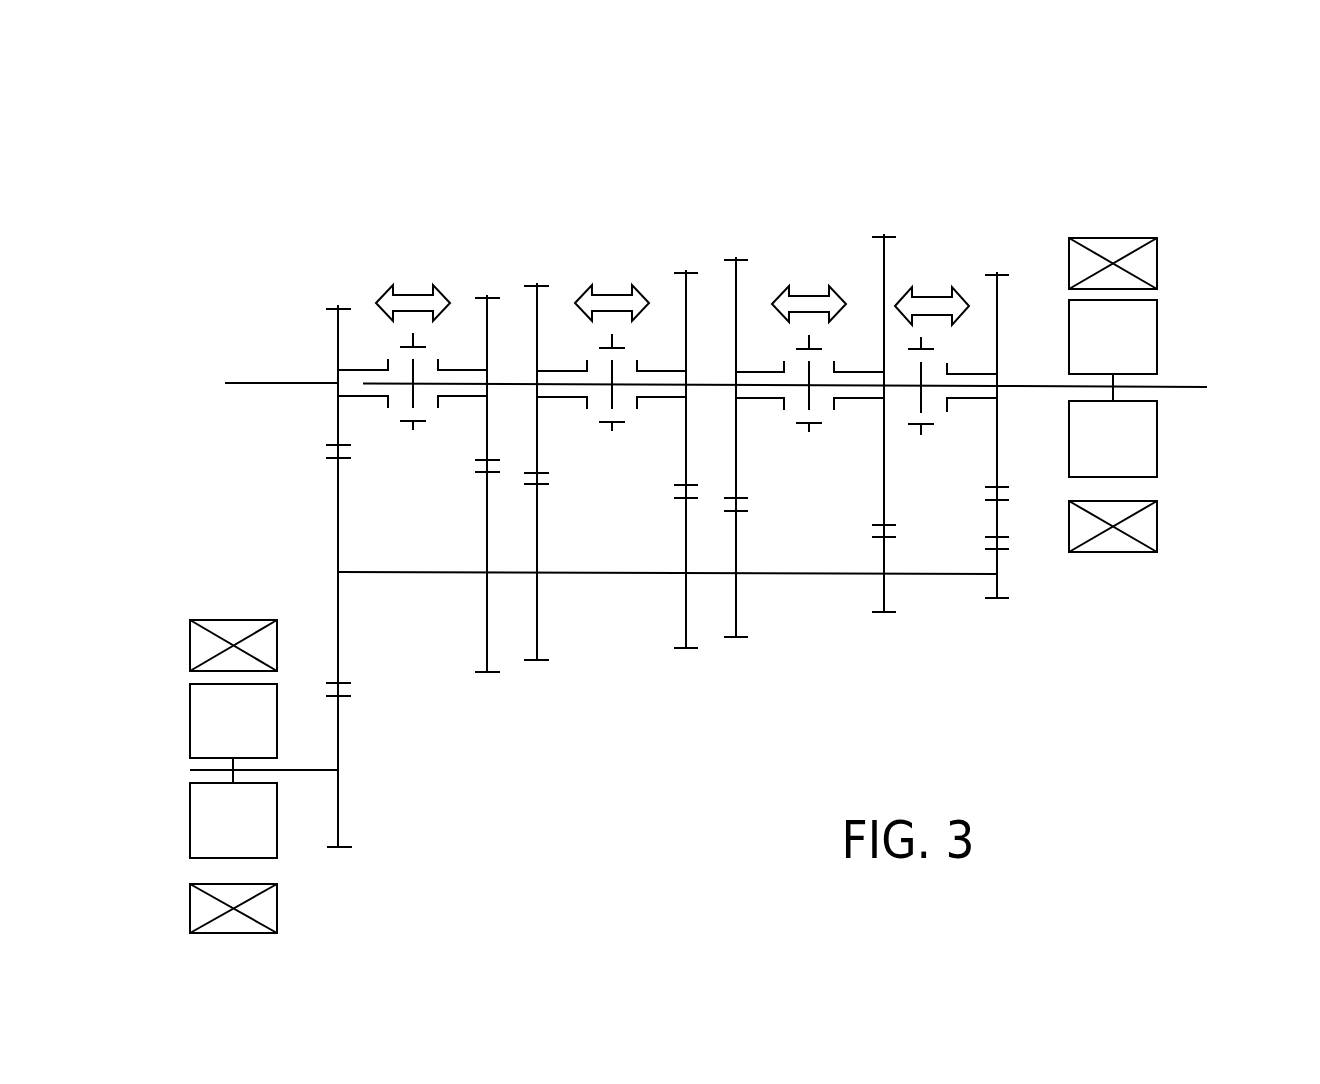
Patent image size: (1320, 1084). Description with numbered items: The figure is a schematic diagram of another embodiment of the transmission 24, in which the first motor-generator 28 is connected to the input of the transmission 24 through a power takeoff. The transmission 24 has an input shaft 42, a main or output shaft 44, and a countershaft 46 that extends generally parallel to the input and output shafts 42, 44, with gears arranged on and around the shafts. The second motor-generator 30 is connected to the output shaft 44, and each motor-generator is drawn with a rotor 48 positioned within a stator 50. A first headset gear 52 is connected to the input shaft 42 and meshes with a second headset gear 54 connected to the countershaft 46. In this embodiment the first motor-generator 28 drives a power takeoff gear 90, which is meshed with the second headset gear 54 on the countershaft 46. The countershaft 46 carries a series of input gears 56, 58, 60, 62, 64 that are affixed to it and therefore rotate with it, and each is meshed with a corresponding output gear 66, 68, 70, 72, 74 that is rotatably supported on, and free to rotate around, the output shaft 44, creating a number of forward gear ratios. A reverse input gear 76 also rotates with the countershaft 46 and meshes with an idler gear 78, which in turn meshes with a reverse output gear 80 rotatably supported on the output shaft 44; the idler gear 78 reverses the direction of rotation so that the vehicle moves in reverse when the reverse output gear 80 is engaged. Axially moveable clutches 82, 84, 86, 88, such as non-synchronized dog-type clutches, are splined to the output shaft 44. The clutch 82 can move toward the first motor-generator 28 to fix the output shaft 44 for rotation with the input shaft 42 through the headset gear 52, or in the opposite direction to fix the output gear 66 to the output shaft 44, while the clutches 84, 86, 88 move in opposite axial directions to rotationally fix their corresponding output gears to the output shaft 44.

The transmission 24 is at (879, 149).
The first motor-generator 28 is at (210, 605).
The second motor-generator 30 is at (1087, 221).
The input shaft 42 is at (262, 383).
The output shaft 44 is at (1168, 387).
The countershaft 46 is at (835, 574).
The rotor 48 is at (190, 747).
The stator 50 is at (277, 645).
The first headset gear 52 is at (338, 305).
The second headset gear 54 is at (335, 521).
The input gear 56 is at (488, 584).
The input gear 58 is at (538, 585).
The input gear 60 is at (686, 622).
The input gear 62 is at (737, 585).
The input gear 64 is at (885, 585).
The output gear 66 is at (487, 295).
The output gear 68 is at (537, 283).
The output gear 70 is at (686, 270).
The output gear 72 is at (736, 257).
The output gear 74 is at (884, 234).
The reverse input gear 76 is at (1000, 563).
The idler gear 78 is at (997, 527).
The reverse output gear 80 is at (997, 272).
The clutch 82 is at (410, 447).
The clutch 84 is at (605, 452).
The clutch 86 is at (802, 454).
The clutch 88 is at (927, 462).
The power takeoff gear 90 is at (342, 808).